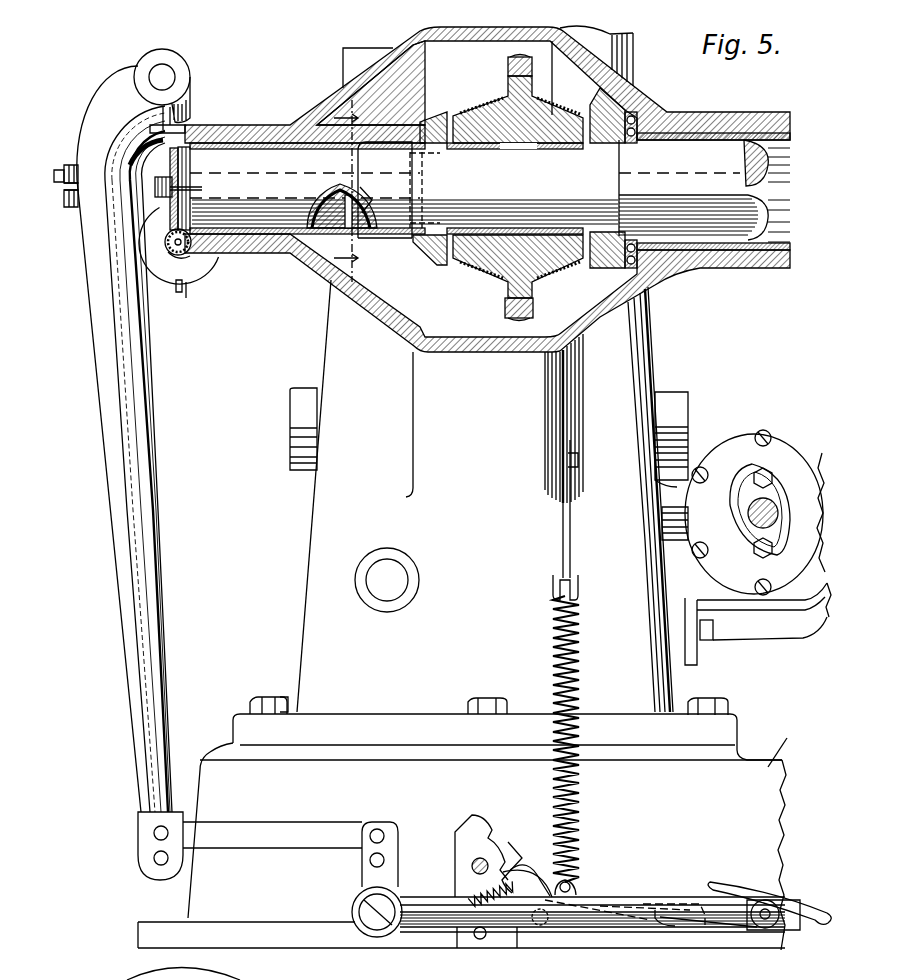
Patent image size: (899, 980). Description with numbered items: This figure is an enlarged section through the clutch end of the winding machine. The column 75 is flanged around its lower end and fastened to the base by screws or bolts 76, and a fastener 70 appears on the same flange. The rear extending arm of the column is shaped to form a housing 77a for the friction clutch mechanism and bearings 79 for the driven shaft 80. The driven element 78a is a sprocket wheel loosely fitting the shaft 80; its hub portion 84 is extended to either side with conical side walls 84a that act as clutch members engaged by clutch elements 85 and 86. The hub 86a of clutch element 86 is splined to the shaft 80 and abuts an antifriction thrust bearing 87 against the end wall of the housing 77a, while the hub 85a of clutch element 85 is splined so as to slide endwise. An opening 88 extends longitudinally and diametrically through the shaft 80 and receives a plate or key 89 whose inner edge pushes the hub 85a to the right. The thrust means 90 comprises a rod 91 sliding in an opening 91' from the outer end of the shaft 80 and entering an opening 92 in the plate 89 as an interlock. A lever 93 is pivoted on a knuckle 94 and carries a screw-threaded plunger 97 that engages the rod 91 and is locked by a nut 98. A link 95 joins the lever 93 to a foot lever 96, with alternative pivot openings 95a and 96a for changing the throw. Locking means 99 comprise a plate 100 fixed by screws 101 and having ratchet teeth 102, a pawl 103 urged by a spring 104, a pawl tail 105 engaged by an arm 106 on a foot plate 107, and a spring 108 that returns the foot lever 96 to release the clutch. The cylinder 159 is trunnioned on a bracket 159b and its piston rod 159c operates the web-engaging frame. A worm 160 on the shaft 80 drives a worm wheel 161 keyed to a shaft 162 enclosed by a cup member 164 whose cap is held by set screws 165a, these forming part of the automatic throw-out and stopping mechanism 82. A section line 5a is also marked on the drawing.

The knuckle 94 is at (176, 70).
The bearings 79 is at (257, 138).
The section line 5a is at (346, 189).
The driven element 78a is at (507, 78).
The hub 86a is at (612, 118).
The antifriction thrust bearing 87 is at (629, 140).
The driven shaft 80 is at (704, 191).
The rod 91 is at (160, 177).
The opening 91' is at (465, 189).
The worm 160 is at (196, 188).
The plunger 97 is at (60, 174).
The nut 98 is at (67, 210).
The conical side walls 84a is at (466, 150).
The hub portion 84 is at (520, 150).
The opening 92 is at (367, 205).
The opening 88 is at (336, 222).
The plate or key 89 is at (386, 236).
The hub 85a is at (410, 250).
The clutch element 85 is at (470, 282).
The clutch element 86 is at (560, 272).
The automatic throw-out and stopping mechanism 82 is at (188, 250).
The shaft 162 is at (172, 260).
The worm wheel 161 is at (184, 256).
The set screws 165a is at (179, 292).
The cup member 164 is at (188, 296).
The thrust means 90 is at (123, 203).
The housing 77a is at (497, 352).
The column 75 is at (322, 515).
The cylinder 159 is at (790, 450).
The piston rod 159c is at (770, 500).
The bracket 159b is at (787, 632).
The lever 93 is at (158, 580).
The screws or bolts 76 is at (267, 696).
The base 70 is at (708, 700).
The link 95 is at (278, 824).
The openings 95a is at (160, 864).
The openings 96a is at (370, 860).
The foot lever 96 is at (425, 897).
The plate 100 is at (472, 822).
The screws 101 is at (470, 948).
The ratchet teeth 102 is at (496, 840).
The locking means 99 is at (527, 874).
The pawl 103 is at (541, 886).
The spring 104 is at (482, 890).
The spring 108 is at (580, 814).
The tail 105 is at (614, 906).
The arm 106 is at (673, 906).
The foot plate 107 is at (732, 890).